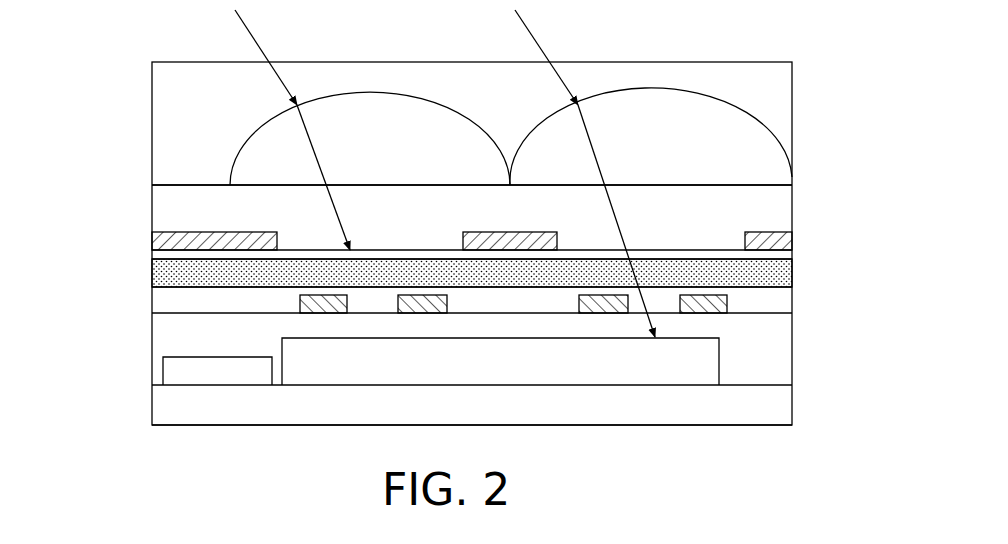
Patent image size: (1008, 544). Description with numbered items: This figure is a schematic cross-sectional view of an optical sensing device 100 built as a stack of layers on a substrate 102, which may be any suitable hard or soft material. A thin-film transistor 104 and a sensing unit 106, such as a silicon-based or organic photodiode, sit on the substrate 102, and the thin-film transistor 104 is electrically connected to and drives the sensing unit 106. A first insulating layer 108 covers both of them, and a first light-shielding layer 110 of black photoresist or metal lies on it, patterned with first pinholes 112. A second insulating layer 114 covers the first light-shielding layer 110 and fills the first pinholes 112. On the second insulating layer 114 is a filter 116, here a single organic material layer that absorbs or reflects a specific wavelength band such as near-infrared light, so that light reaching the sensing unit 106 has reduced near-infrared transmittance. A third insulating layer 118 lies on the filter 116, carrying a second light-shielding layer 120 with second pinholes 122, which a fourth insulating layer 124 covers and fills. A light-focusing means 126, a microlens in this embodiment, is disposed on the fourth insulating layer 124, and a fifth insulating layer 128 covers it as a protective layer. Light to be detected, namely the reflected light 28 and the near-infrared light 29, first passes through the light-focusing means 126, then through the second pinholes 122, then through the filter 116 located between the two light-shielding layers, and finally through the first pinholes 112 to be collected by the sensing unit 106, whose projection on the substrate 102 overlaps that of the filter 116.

The optical sensing device 100 is at (105, 48).
The substrate 102 is at (787, 405).
The thin-film transistor 104 is at (170, 372).
The sensing unit 106 is at (525, 377).
The first insulating layer 108 is at (787, 366).
The first light-shielding layer 110 is at (718, 303).
The first pinholes 112 is at (657, 302).
The second insulating layer 114 is at (787, 300).
The filter 116 is at (787, 272).
The third insulating layer 118 is at (165, 253).
The second light-shielding layer 120 is at (792, 238).
The second pinholes 122 is at (710, 230).
The fourth insulating layer 124 is at (787, 197).
The light-focusing means 126 is at (765, 152).
The fifth insulating layer 128 is at (787, 108).
The reflected light 28 is at (538, 35).
The near-infrared light 29 is at (256, 33).